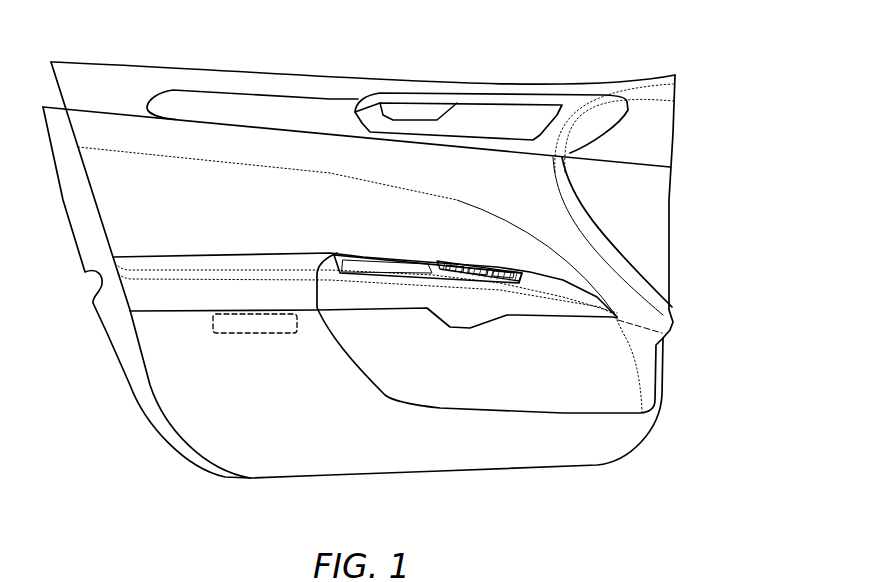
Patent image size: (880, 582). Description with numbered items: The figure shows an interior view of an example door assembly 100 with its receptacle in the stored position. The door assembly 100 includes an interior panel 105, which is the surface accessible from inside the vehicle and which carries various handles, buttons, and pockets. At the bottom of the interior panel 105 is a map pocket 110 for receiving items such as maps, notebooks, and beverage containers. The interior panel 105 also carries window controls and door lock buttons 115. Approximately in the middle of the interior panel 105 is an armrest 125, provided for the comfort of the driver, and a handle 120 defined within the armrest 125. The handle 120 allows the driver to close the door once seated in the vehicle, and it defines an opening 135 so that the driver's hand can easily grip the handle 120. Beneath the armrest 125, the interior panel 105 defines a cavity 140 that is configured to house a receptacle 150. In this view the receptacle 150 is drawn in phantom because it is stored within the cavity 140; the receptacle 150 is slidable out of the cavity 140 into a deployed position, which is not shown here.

The door assembly 100 is at (735, 12).
The interior panel 105 is at (653, 213).
The map pocket 110 is at (415, 433).
The window controls and door lock buttons 115 is at (460, 262).
The handle 120 is at (392, 298).
The armrest 125 is at (265, 262).
The opening 135 is at (385, 262).
The cavity 140 is at (277, 357).
The receptacle 150 is at (233, 333).